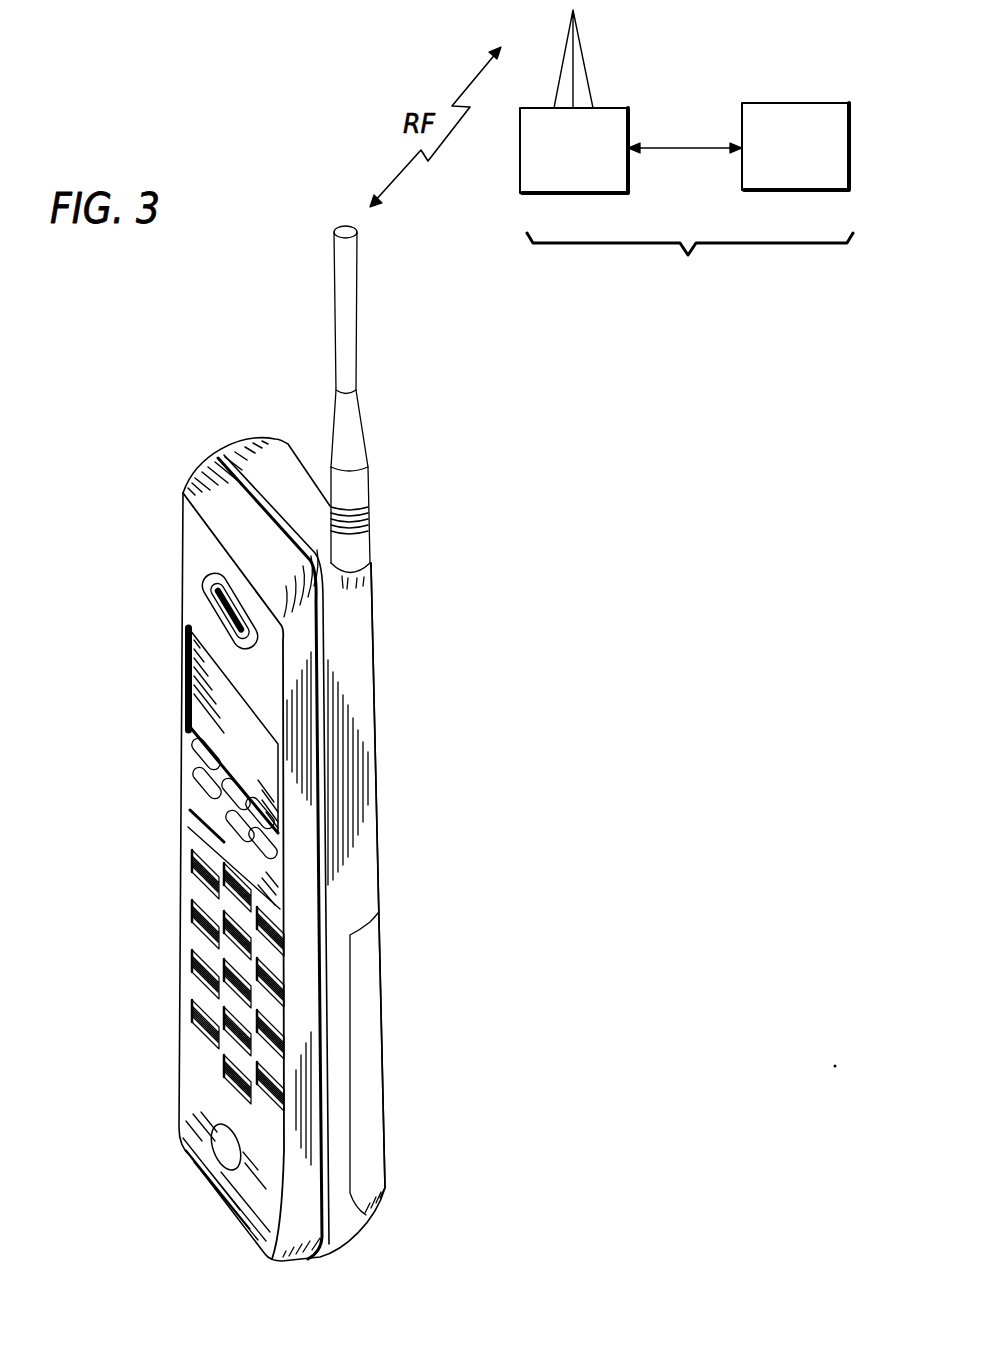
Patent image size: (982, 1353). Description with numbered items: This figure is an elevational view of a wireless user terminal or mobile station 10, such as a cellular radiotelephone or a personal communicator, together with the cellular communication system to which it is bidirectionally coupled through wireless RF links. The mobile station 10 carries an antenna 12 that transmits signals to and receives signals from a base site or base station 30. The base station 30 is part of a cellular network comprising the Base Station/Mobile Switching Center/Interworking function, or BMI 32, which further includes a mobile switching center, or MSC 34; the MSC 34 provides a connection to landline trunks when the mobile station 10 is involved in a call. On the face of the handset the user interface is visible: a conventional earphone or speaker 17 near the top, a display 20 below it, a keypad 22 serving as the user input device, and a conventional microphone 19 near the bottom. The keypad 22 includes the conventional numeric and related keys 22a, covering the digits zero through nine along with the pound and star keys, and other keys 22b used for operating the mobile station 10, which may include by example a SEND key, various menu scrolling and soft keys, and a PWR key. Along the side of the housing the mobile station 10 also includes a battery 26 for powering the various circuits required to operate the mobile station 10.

The mobile station 10 is at (118, 482).
The antenna 12 is at (347, 339).
The earphone or speaker 17 is at (223, 592).
The microphone 19 is at (222, 1152).
The display 20 is at (209, 711).
The keypad 22 is at (254, 923).
The numeric and related keys 22a is at (195, 955).
The other keys 22b is at (192, 808).
The battery 26 is at (368, 1094).
The base station 30 is at (567, 193).
The Base Station/Mobile Switching Center/Interworking function (BMI) 32 is at (690, 273).
The mobile switching center (MSC) 34 is at (787, 190).